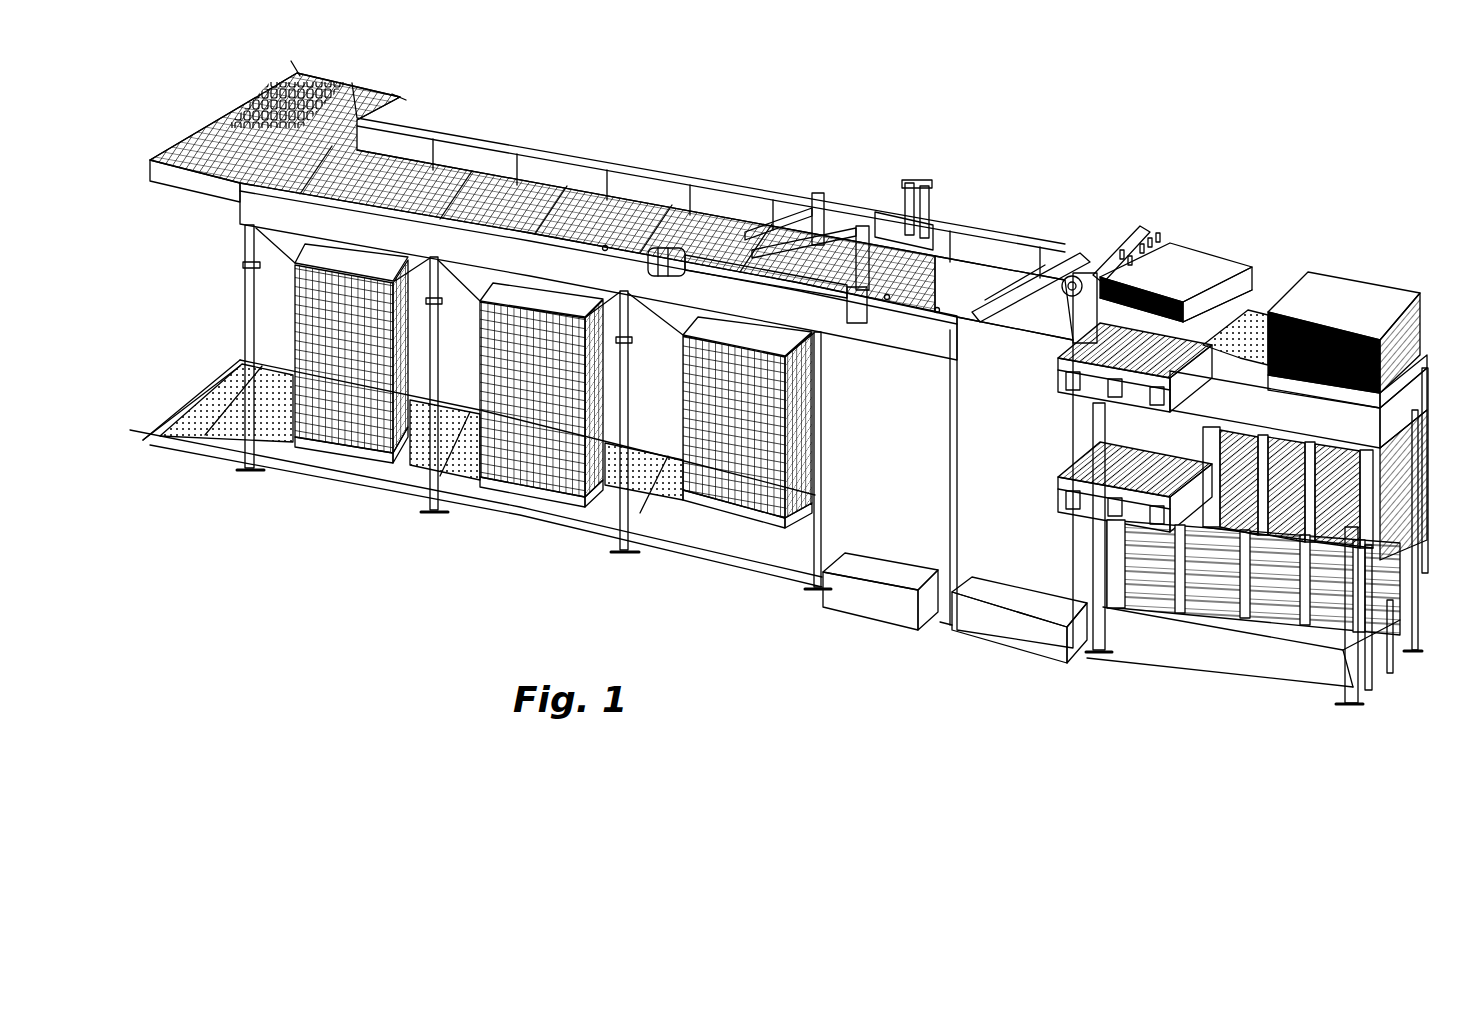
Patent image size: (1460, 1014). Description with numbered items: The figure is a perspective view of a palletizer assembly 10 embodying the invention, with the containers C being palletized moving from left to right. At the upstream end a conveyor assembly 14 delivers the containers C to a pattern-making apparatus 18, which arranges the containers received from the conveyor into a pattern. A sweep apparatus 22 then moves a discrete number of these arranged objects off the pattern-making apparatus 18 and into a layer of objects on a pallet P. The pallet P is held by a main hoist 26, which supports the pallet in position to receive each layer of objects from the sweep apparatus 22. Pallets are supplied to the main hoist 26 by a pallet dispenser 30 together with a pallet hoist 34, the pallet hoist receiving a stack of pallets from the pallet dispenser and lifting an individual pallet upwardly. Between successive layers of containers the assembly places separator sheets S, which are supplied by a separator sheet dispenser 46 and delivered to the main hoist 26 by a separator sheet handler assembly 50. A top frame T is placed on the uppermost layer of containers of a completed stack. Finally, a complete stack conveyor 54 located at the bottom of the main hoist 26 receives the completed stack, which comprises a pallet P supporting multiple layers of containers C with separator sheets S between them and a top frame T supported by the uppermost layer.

The palletizer assembly 10 is at (1088, 189).
The conveyor assembly 14 is at (216, 182).
The pattern-making apparatus 18 is at (716, 174).
The sweep apparatus 22 is at (849, 195).
The main hoist 26 is at (998, 217).
The pallet dispenser 30 is at (1387, 660).
The pallet hoist 34 is at (1033, 672).
The separator sheet dispenser 46 is at (1408, 364).
The separator sheet handler assembly 50 is at (1160, 223).
The complete stack conveyor 54 is at (727, 548).
The container C is at (557, 177).
The separator sheet S is at (1228, 262).
The pallet P is at (355, 446).
The top frame T is at (295, 258).